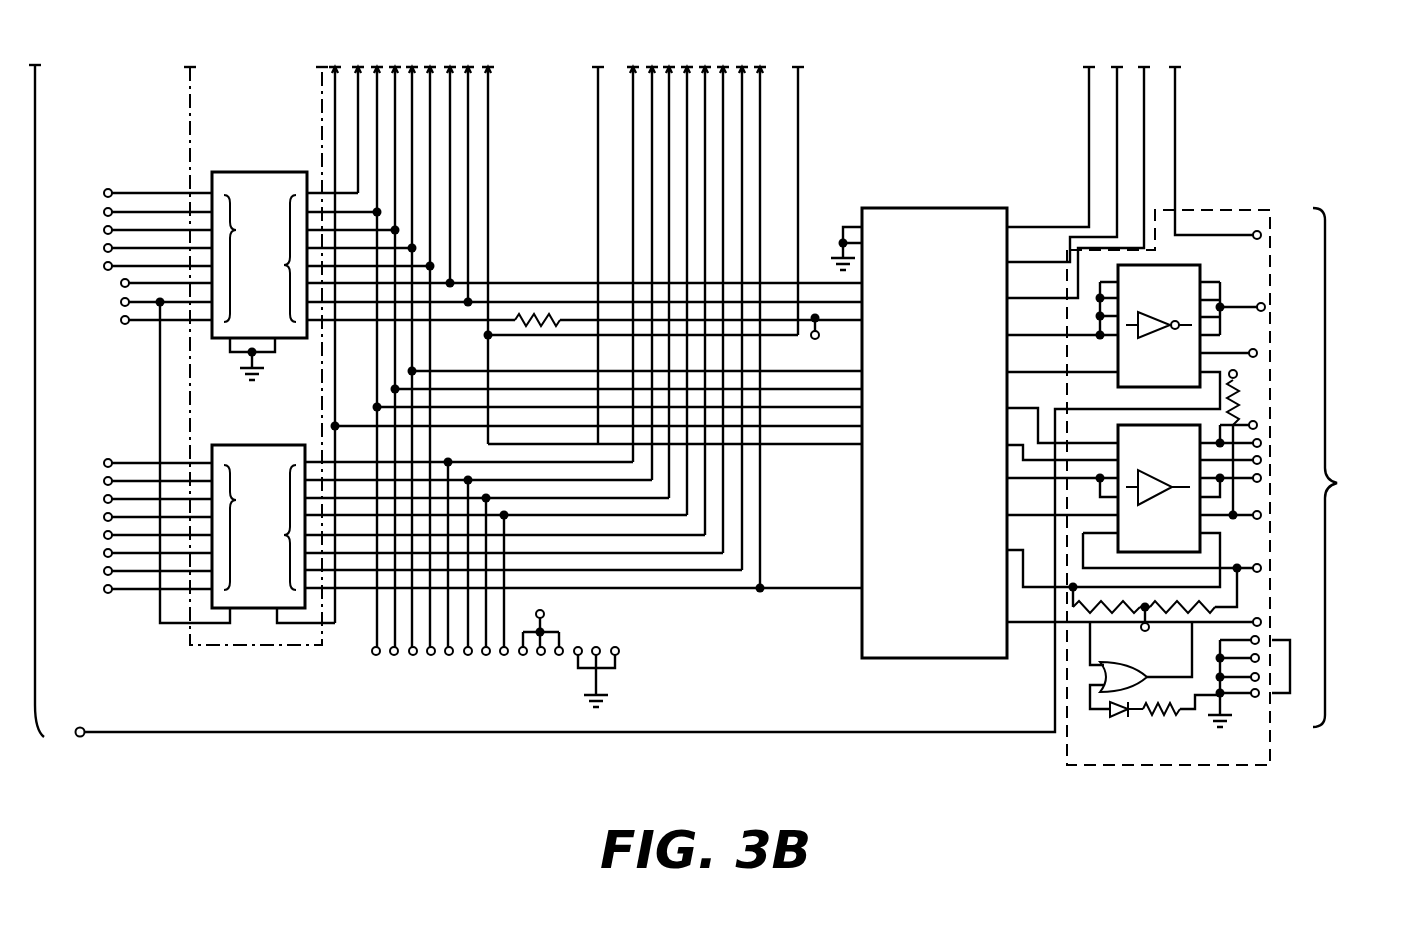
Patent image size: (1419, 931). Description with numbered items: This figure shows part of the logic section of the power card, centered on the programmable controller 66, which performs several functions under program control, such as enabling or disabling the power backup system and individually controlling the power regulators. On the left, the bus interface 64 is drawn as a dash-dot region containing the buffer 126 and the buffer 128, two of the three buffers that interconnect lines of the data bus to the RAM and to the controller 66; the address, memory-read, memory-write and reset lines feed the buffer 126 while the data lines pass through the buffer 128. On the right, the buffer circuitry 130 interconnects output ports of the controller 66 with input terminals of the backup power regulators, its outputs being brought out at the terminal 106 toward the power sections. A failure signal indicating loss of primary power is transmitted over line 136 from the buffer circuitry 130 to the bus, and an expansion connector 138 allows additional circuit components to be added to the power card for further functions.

The bus interface 64 is at (200, 655).
The controller 66 is at (924, 208).
The terminal 106 is at (1257, 220).
The buffer 126 is at (212, 338).
The buffer 128 is at (212, 447).
The buffer circuitry 130 is at (1200, 208).
The line 136 is at (703, 731).
The expansion connector 138 is at (447, 656).